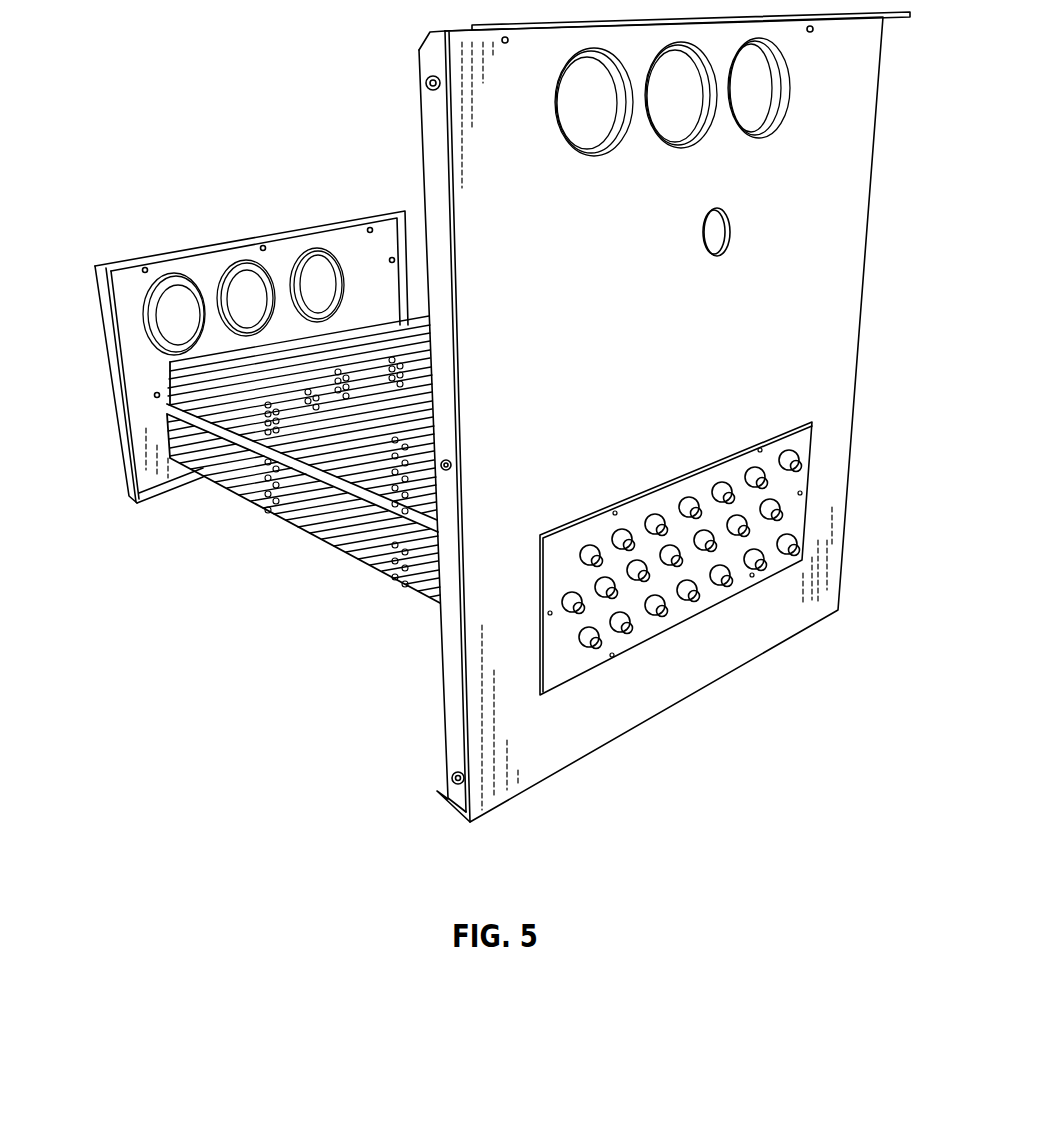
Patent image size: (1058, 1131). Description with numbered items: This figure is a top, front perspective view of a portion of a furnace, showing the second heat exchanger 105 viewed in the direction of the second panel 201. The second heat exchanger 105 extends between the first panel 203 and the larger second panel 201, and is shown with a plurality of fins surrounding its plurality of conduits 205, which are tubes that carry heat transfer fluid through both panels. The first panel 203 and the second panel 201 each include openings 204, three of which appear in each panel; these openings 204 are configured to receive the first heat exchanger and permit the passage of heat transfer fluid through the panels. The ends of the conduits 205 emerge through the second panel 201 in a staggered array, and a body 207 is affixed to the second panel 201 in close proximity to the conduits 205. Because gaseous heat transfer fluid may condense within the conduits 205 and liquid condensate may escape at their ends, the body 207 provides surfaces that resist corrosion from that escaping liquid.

The second heat exchanger 105 is at (213, 371).
The second panel 201 is at (862, 62).
The first panel 203 is at (375, 225).
The openings 204 is at (590, 134).
The conduits 205 is at (763, 566).
The body 207 is at (794, 517).